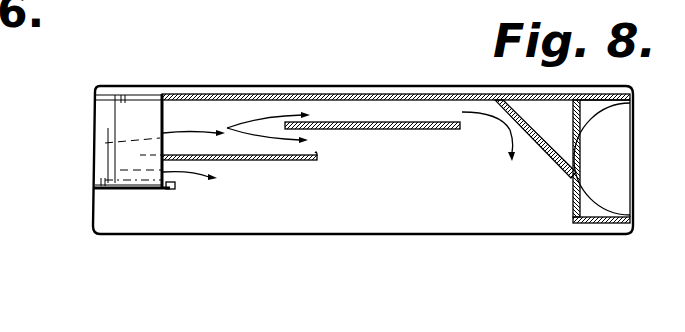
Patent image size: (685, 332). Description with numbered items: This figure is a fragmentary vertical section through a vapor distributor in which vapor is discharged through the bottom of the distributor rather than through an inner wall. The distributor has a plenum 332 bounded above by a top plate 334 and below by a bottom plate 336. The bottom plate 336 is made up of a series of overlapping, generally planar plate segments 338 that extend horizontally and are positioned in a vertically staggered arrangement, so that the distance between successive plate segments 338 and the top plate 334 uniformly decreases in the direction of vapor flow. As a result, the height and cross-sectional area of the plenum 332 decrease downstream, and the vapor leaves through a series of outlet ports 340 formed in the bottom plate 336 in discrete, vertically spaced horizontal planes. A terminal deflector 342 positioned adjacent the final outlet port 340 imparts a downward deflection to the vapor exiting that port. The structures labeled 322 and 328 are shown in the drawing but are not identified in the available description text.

The housing 322 is at (357, 223).
The curved reflector wall 328 is at (622, 118).
The plenum 332 is at (208, 105).
The top plate 334 is at (397, 95).
The bottom plate 336 is at (279, 162).
The plate segments 338 is at (380, 130).
The outlet ports 340 is at (316, 153).
The terminal deflector 342 is at (540, 142).